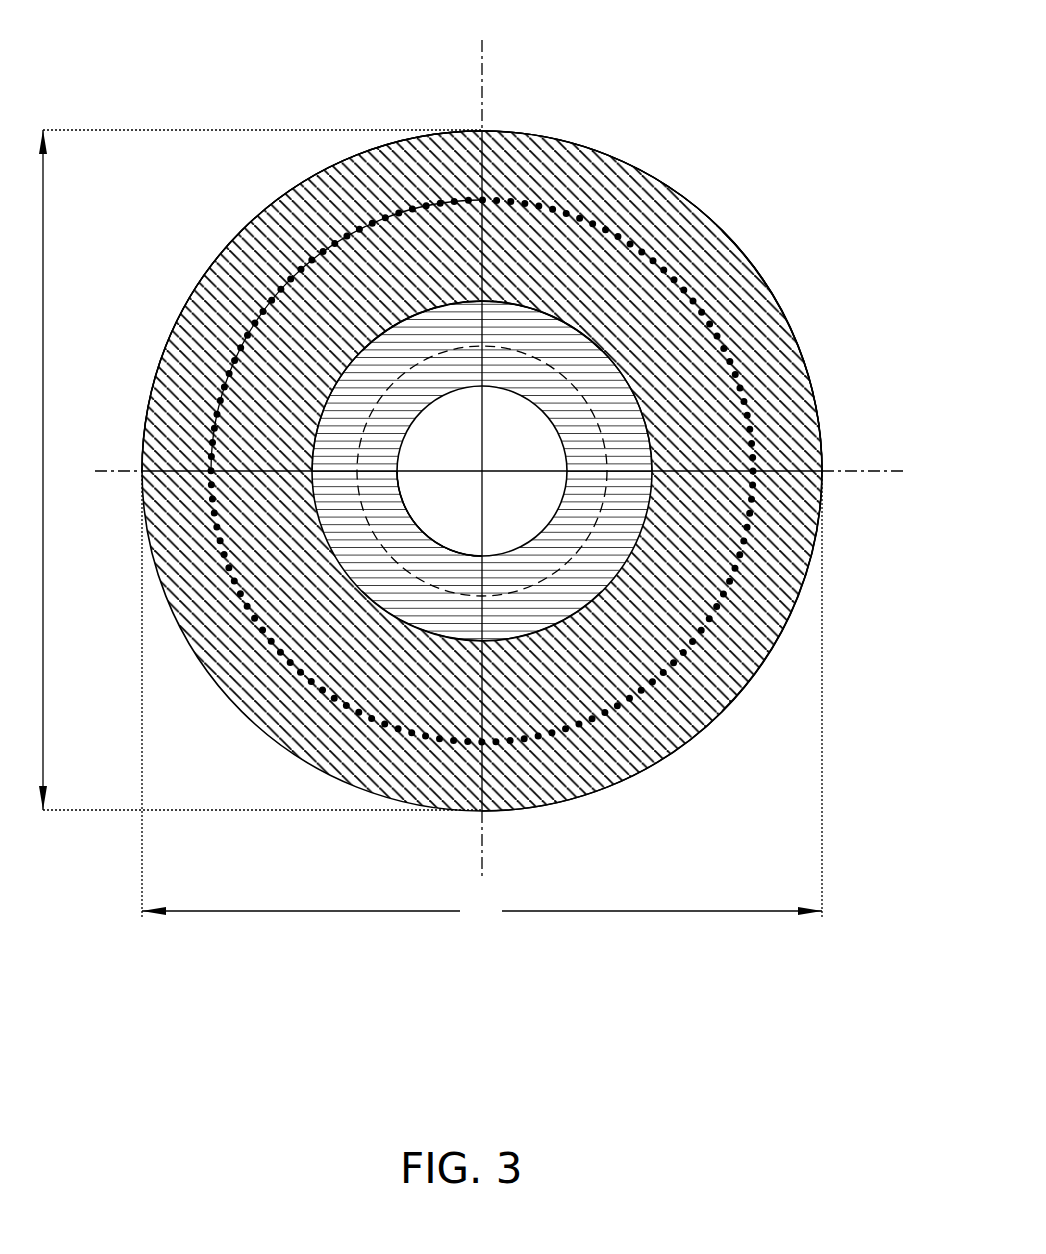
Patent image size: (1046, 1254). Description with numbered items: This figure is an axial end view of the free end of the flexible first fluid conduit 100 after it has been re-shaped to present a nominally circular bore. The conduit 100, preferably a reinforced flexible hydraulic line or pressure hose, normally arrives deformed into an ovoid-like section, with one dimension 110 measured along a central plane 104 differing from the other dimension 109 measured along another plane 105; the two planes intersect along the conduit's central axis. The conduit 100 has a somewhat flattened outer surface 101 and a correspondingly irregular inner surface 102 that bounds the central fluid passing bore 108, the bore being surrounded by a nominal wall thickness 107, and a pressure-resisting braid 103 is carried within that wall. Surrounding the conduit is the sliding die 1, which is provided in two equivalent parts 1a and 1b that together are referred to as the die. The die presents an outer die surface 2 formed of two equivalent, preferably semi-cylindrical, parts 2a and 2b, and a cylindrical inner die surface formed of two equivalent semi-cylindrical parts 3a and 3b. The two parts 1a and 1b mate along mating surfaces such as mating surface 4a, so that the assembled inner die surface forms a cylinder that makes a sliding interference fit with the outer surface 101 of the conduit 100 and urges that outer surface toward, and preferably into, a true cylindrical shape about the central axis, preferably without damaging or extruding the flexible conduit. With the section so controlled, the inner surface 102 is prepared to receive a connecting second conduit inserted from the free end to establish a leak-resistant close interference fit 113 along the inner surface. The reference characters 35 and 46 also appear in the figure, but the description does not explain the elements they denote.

The sliding die 1 is at (613, 197).
The die part 1a is at (773, 400).
The die part 1b is at (765, 628).
The outer die surface 2 is at (518, 132).
The outer die surface part 2a is at (678, 197).
The outer die surface part 2b is at (717, 717).
The inner die surface part 3a is at (527, 303).
The inner die surface part 3b is at (610, 587).
The mating surface 4a is at (753, 467).
The outer wall 35 is at (310, 205).
The reinforcing element 46 is at (199, 470).
The first fluid conduit 100 is at (600, 390).
The outer surface 101 is at (592, 338).
The inner surface 102 is at (566, 440).
The pressure-resisting braid 103 is at (607, 447).
The central plane 104 is at (853, 472).
The plane 105 is at (482, 80).
The wall thickness 107 is at (485, 812).
The central fluid passing bore 108 is at (508, 512).
The dimension 109 is at (482, 699).
The dimension 110 is at (252, 470).
The interference fit 113 is at (433, 537).